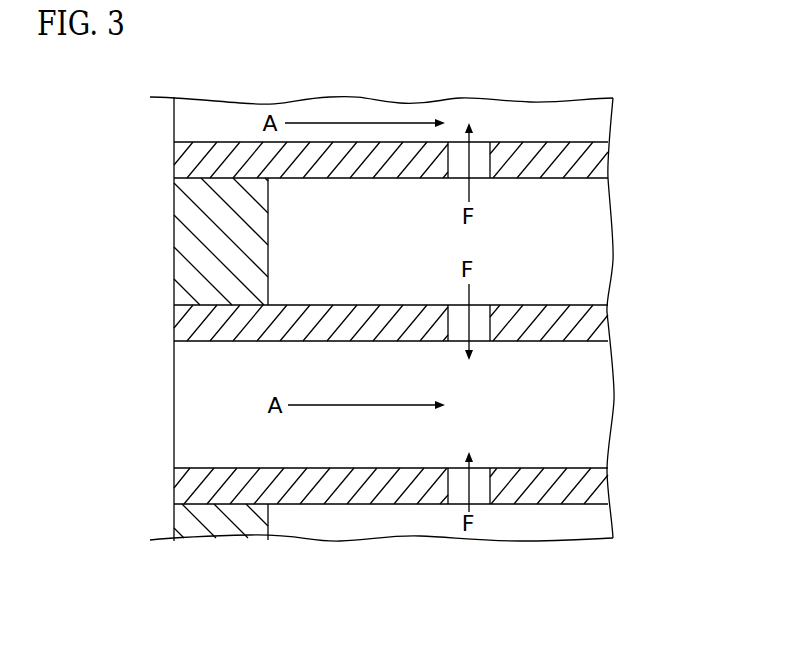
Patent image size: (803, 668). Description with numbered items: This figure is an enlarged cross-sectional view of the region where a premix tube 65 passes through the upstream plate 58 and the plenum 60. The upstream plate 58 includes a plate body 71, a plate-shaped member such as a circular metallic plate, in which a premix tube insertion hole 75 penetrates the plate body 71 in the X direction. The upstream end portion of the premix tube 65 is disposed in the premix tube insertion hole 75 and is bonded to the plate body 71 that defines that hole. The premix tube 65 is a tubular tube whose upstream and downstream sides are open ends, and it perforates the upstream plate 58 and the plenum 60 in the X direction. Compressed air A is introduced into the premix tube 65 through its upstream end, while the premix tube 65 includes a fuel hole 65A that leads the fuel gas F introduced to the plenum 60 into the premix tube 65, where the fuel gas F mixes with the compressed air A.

The upstream plate 58 is at (166, 221).
The plenum 60 is at (565, 190).
The premix tube 65 is at (618, 171).
The fuel hole 65A is at (480, 313).
The plate body 71 is at (183, 262).
The premix tube insertion hole 75 is at (210, 313).